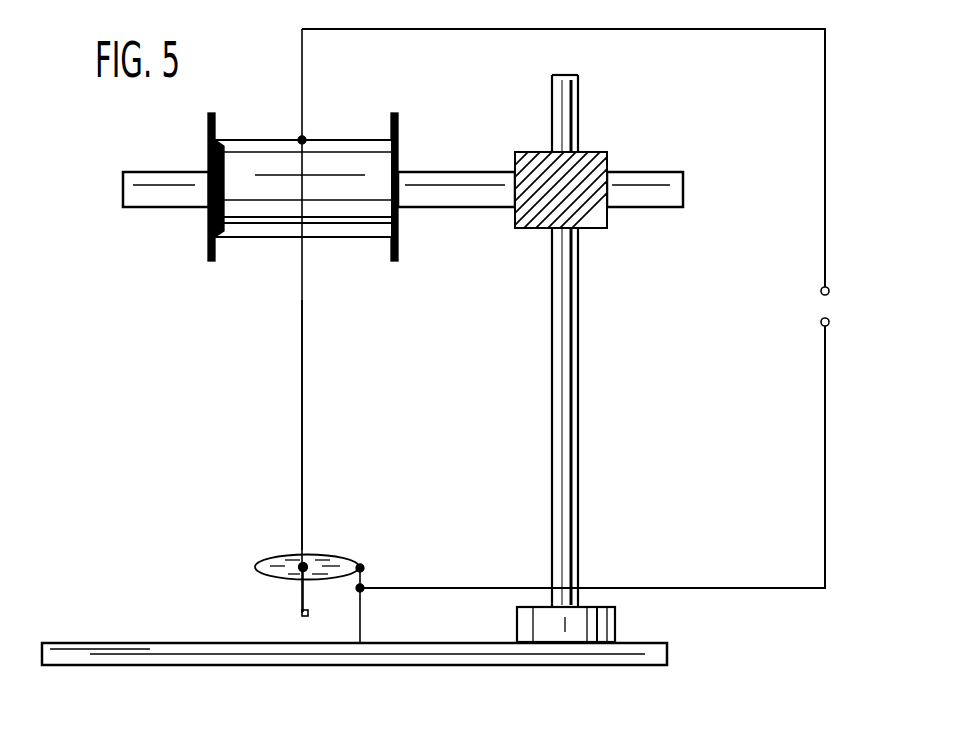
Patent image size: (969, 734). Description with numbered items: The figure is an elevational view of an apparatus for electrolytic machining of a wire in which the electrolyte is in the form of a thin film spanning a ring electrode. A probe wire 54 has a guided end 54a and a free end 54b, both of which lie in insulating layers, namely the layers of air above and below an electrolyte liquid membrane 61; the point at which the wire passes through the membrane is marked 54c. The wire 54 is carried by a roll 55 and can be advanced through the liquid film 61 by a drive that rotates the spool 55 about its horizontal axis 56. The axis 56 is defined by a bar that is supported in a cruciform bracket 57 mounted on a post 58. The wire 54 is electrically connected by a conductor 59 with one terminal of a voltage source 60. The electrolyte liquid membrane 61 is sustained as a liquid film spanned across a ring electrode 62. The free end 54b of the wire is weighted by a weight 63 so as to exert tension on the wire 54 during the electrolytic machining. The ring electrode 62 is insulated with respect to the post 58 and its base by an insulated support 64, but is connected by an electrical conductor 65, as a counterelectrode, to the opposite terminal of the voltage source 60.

The probe wire 54 is at (300, 285).
The guided end 54a is at (301, 437).
The free end 54b is at (300, 582).
The wire contact point 54c is at (298, 556).
The roll 55 is at (270, 215).
The horizontal axis 56 is at (165, 192).
The cruciform bracket 57 is at (590, 160).
The post 58 is at (566, 305).
The conductor 59 is at (827, 148).
The voltage source 60 is at (829, 304).
The electrolyte liquid membrane 61 is at (330, 562).
The ring electrode 62 is at (362, 565).
The weight 63 is at (302, 613).
The insulated support 64 is at (364, 615).
The electrical conductor 65 is at (829, 437).